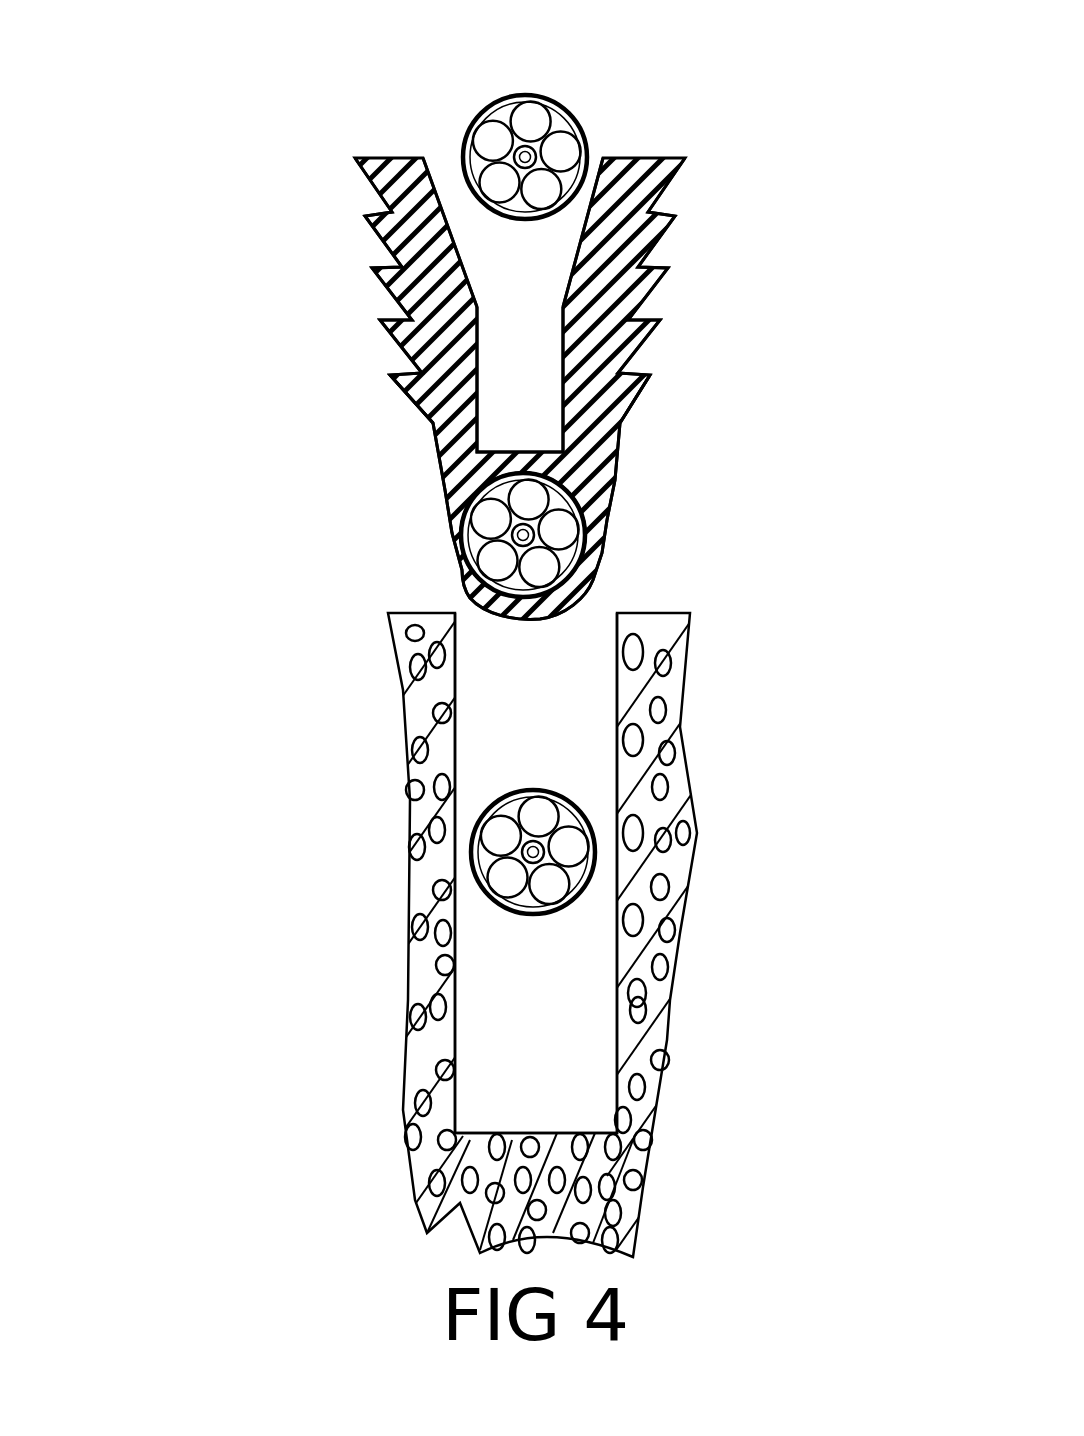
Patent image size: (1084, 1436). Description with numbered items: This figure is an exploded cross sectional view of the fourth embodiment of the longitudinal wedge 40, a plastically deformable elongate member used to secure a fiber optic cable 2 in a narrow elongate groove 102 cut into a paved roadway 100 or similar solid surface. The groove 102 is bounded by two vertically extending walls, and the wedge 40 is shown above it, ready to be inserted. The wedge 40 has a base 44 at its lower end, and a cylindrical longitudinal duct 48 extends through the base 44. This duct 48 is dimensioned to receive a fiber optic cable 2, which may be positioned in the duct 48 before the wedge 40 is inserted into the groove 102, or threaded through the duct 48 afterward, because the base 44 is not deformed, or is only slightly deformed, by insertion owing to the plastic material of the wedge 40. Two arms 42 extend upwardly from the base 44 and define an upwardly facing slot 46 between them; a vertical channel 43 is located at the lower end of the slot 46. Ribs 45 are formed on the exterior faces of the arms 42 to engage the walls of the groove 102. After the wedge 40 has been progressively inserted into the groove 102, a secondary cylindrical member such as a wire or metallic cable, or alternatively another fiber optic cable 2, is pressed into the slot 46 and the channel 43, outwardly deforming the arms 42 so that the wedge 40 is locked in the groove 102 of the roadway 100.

The fiber optic cable 2 is at (491, 96).
The longitudinal wedge 40 is at (333, 165).
The arms 42 is at (407, 397).
The vertical channel 43 is at (527, 433).
The base 44 is at (600, 466).
The ribs 45 is at (368, 195).
The upwardly facing slot 46 is at (602, 160).
The cylindrical longitudinal duct 48 is at (598, 531).
The paved roadway 100 is at (440, 768).
The groove 102 is at (571, 1037).